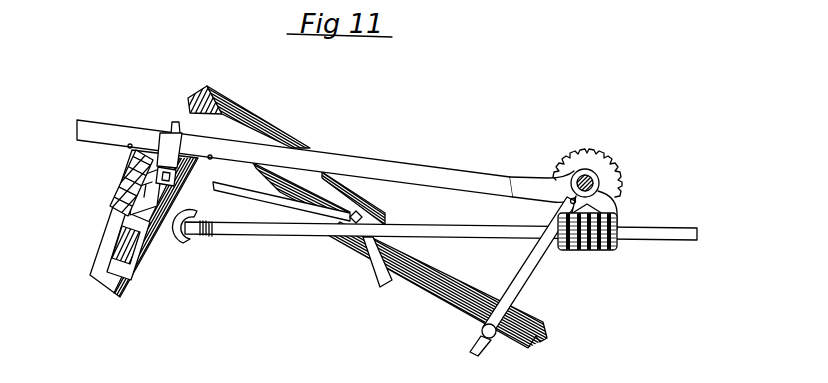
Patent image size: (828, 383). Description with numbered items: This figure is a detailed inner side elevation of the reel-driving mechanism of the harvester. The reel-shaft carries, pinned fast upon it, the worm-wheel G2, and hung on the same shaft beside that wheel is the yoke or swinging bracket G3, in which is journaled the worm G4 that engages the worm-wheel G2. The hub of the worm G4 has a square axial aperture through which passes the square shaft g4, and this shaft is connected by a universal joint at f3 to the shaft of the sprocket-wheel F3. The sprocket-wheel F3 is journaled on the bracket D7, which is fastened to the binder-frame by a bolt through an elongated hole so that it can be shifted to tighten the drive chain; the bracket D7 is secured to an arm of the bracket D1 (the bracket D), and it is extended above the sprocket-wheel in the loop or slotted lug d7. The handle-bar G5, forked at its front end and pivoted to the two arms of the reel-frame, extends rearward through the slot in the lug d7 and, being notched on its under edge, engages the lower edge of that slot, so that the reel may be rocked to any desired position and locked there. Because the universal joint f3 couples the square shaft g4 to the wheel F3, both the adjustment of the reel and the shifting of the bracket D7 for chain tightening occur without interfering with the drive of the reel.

The bracket D is at (123, 278).
The bracket D1 is at (110, 238).
The bracket D7 is at (130, 223).
The sprocket-wheel F3 is at (133, 181).
The loop or slotted lug d7 is at (173, 125).
The handle-bar G5 is at (338, 160).
The universal joint f3 is at (181, 238).
The square shaft g4 is at (441, 276).
The worm-wheel G2 is at (612, 163).
The yoke or swinging bracket G3 is at (610, 217).
The worm G4 is at (577, 243).